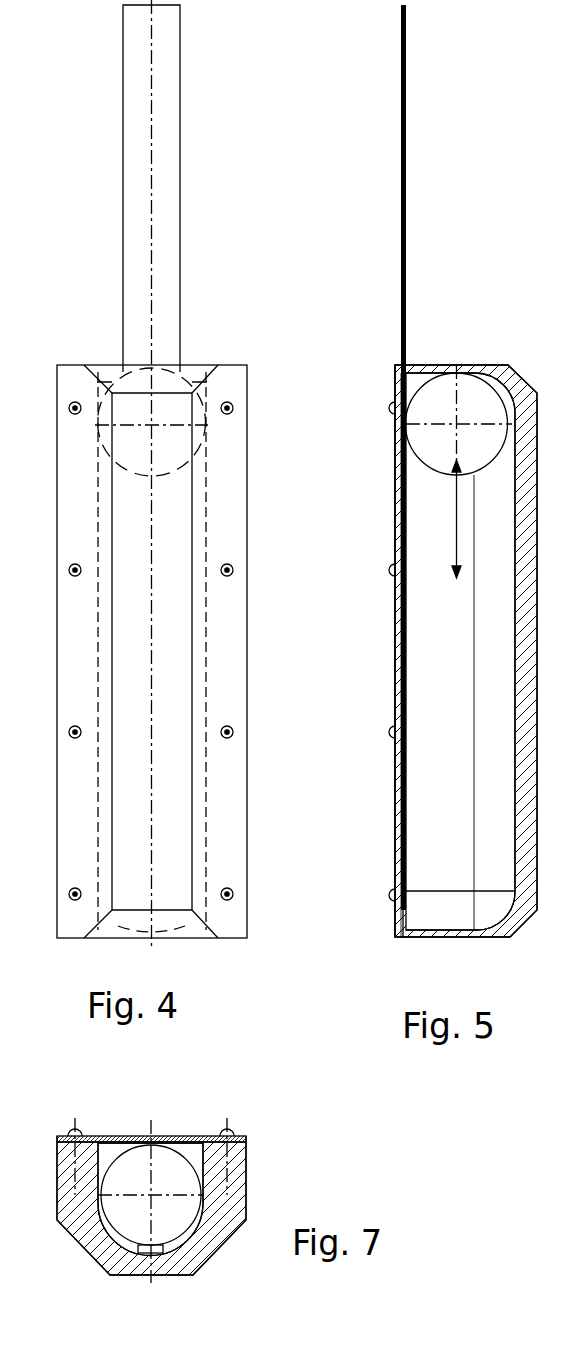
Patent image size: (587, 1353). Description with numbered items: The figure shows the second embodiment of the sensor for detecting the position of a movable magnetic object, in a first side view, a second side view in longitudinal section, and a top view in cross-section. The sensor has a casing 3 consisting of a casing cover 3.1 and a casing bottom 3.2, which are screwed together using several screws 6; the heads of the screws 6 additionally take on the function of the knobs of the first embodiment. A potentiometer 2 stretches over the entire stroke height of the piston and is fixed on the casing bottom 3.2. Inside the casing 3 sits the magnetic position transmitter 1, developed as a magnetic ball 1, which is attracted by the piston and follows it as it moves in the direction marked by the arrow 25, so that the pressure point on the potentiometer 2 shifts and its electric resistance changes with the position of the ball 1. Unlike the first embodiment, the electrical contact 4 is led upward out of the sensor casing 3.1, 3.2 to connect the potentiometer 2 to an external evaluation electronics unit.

In FIG. 4, the magnetic position transmitter 1 is at (185, 378).
In FIG. 5, the magnetic position transmitter 1 is at (497, 375).
In FIG. 7, the magnetic position transmitter 1 is at (133, 1162).
In FIG. 4, the potentiometer 2 is at (180, 883).
In FIG. 5, the potentiometer 2 is at (406, 867).
In FIG. 7, the potentiometer 2 is at (98, 1140).
In FIG. 4, the sensor casing 3 is at (247, 665).
In FIG. 5, the sensor casing 3 is at (537, 597).
In FIG. 7, the casing cover 3.1 is at (247, 1190).
In FIG. 5, the casing bottom 3.2 is at (395, 833).
In FIG. 7, the casing bottom 3.2 is at (170, 1136).
In FIG. 4, the electrical connections 4 is at (180, 143).
In FIG. 5, the electrical connections 4 is at (405, 217).
In FIG. 4, the screws 6 is at (233, 404).
In FIG. 5, the screws 6 is at (389, 406).
In FIG. 7, the screws 6 is at (230, 1130).
In FIG. 5, the arrow 25 is at (442, 519).